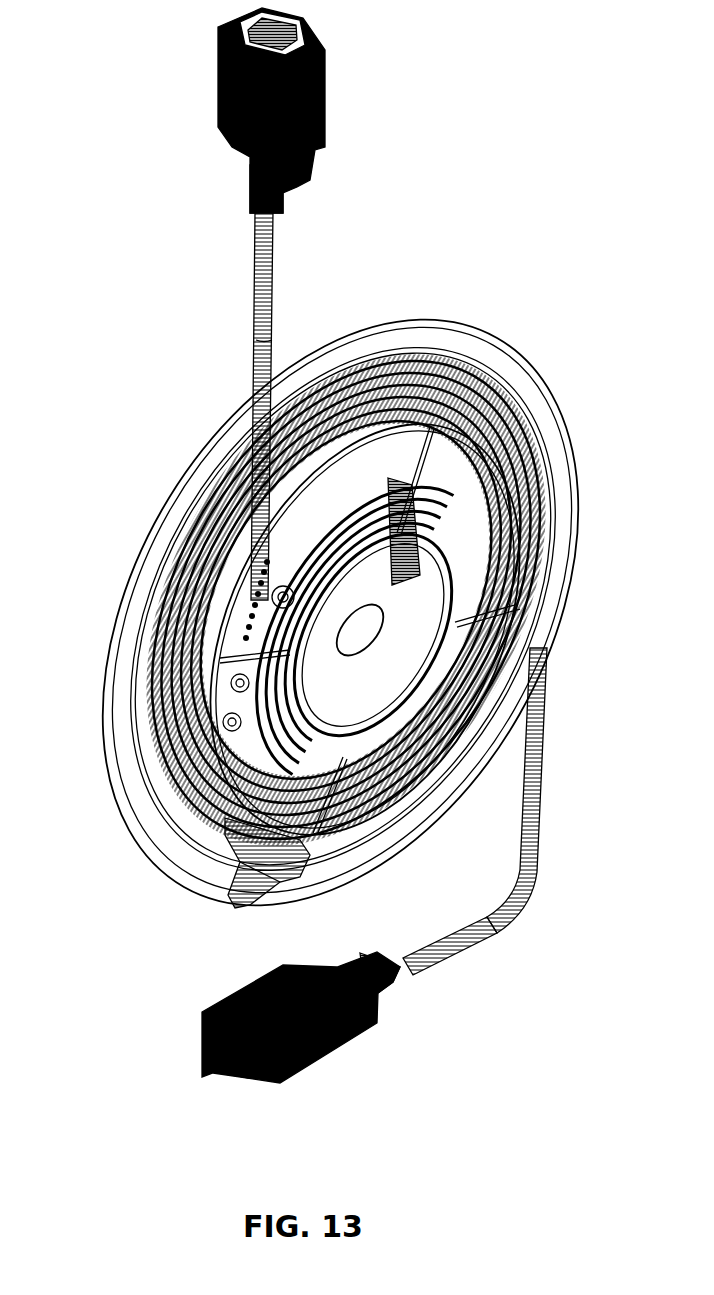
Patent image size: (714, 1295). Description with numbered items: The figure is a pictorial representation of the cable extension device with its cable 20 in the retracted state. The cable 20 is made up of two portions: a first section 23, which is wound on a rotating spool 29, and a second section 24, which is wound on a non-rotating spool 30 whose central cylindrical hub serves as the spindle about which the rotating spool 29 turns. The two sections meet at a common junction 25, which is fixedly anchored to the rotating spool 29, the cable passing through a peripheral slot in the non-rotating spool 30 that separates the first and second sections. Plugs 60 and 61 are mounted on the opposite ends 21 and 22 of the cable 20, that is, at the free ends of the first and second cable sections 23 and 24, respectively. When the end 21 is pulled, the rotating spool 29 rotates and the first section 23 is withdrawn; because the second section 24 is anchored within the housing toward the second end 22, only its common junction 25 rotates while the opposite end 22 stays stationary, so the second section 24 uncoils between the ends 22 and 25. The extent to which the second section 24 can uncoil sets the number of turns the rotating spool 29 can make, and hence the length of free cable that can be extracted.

The cable 20 is at (216, 296).
The end of the cable 21 is at (400, 967).
The opposite end of the cable 22 is at (253, 212).
The first section 23 is at (537, 765).
The second section 24 is at (275, 255).
The common junction 25 is at (303, 873).
The rotating spool 29 is at (572, 495).
The non-rotating spool 30 is at (112, 648).
The plug 60 is at (325, 63).
The plug 61 is at (358, 1028).